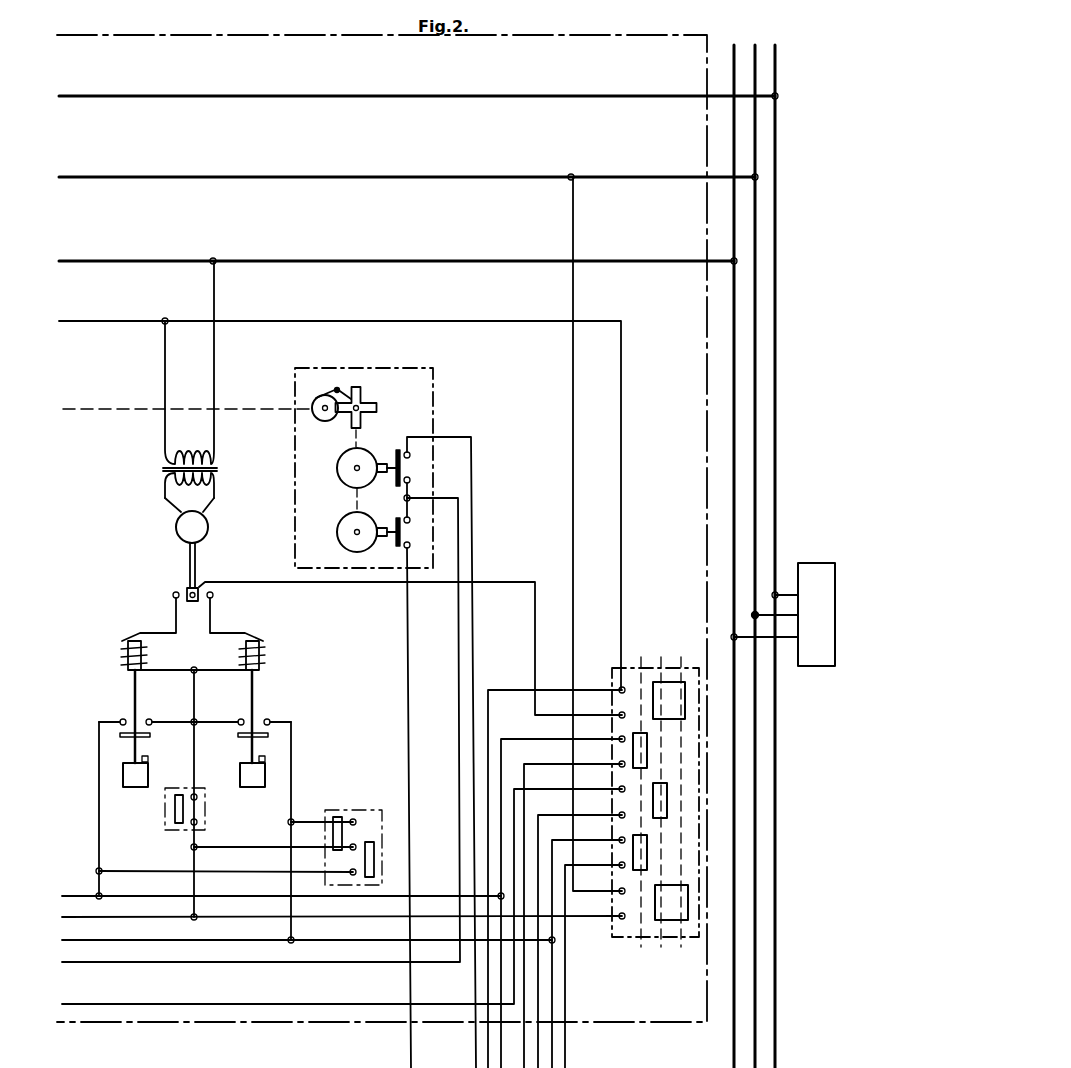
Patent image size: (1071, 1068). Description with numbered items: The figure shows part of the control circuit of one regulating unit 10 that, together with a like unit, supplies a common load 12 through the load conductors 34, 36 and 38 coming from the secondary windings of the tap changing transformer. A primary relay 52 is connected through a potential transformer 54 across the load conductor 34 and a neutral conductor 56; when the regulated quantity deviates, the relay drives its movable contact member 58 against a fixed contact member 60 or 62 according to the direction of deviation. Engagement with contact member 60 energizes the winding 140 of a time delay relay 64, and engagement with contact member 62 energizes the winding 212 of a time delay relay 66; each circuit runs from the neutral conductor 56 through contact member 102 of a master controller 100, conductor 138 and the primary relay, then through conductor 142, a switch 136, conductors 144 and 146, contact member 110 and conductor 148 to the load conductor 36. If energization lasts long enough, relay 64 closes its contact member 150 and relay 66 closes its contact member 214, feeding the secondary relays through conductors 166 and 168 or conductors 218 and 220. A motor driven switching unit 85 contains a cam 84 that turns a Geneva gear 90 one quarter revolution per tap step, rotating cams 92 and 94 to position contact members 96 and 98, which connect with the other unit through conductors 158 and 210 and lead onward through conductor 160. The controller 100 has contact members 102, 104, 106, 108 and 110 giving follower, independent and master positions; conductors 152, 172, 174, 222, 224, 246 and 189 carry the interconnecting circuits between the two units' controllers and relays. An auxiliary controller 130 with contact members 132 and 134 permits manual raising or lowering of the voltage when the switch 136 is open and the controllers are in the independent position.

The regulating unit 10 is at (563, 33).
The load 12 is at (816, 667).
The load conductor 34 is at (448, 257).
The load conductor 36 is at (448, 174).
The load conductor 38 is at (448, 93).
The primary relay 52 is at (176, 531).
The potential transformer 54 is at (162, 468).
The neutral conductor 56 is at (448, 318).
The movable contact member 58 is at (186, 592).
The fixed contact member 60 is at (213, 598).
The fixed contact member 62 is at (173, 597).
The time delay relay 64 is at (286, 707).
The time delay relay 66 is at (121, 707).
The cam member 84 is at (317, 401).
The motor driven switching unit 85 is at (433, 388).
The Geneva gear 90 is at (378, 405).
The cam member 92 is at (338, 464).
The cam member 94 is at (338, 540).
The contact member 96 is at (403, 474).
The contact member 98 is at (403, 523).
The master controller 100 is at (686, 668).
The contact member 102 is at (653, 699).
The contact member 104 is at (633, 753).
The contact member 106 is at (653, 801).
The contact member 108 is at (633, 854).
The contact member 110 is at (655, 903).
The auxiliary controller 130 is at (368, 800).
The contact member 132 is at (333, 840).
The contact member 134 is at (365, 859).
The switch 136 is at (165, 806).
The conductor 138 is at (503, 581).
The energizing winding 140 is at (261, 657).
The conductor 142 is at (195, 714).
The conductor 144 is at (198, 894).
The conductor 146 is at (353, 917).
The conductor 148 is at (573, 578).
The contact member 150 is at (240, 739).
The conductor 152 is at (490, 715).
The conductor 158 is at (474, 980).
The conductor 160 is at (216, 948).
The conductor 166 is at (233, 927).
The conductor 168 is at (292, 770).
The conductor 172 is at (567, 965).
The conductor 174 is at (555, 1047).
The conductor 189 is at (298, 1004).
The conductor 210 is at (410, 661).
The energizing winding 212 is at (143, 657).
The contact member 214 is at (145, 739).
The conductor 218 is at (151, 882).
The conductor 220 is at (99, 845).
The conductor 222 is at (524, 779).
The conductor 224 is at (503, 769).
The conductor 246 is at (541, 1003).